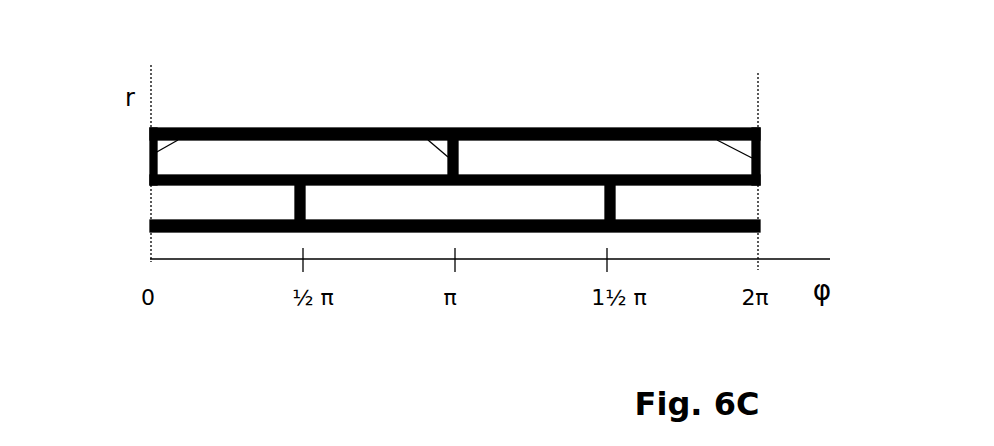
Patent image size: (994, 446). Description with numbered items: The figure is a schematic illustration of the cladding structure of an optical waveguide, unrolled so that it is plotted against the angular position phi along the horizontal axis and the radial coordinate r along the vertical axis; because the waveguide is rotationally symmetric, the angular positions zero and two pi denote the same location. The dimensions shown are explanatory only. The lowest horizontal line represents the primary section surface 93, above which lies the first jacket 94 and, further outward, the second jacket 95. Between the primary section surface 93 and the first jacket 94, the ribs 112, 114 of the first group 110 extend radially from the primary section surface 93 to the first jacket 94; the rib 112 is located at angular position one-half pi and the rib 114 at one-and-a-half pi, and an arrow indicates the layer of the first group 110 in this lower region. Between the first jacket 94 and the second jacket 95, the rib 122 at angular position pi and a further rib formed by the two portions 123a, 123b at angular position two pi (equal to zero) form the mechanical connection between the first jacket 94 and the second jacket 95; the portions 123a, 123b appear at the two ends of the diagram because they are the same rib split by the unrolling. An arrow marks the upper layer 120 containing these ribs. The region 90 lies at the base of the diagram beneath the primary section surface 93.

The reference surface / axis 90 is at (260, 247).
The primary section surface 93 is at (530, 232).
The first jacket 94 is at (177, 186).
The second jacket 95 is at (565, 128).
The first group 110 is at (792, 210).
The rib 112 is at (305, 203).
The rib 114 is at (605, 202).
The upper layer 120 is at (790, 158).
The rib 122 is at (422, 128).
The rib portion 123a is at (713, 128).
The rib portion 123b is at (182, 128).